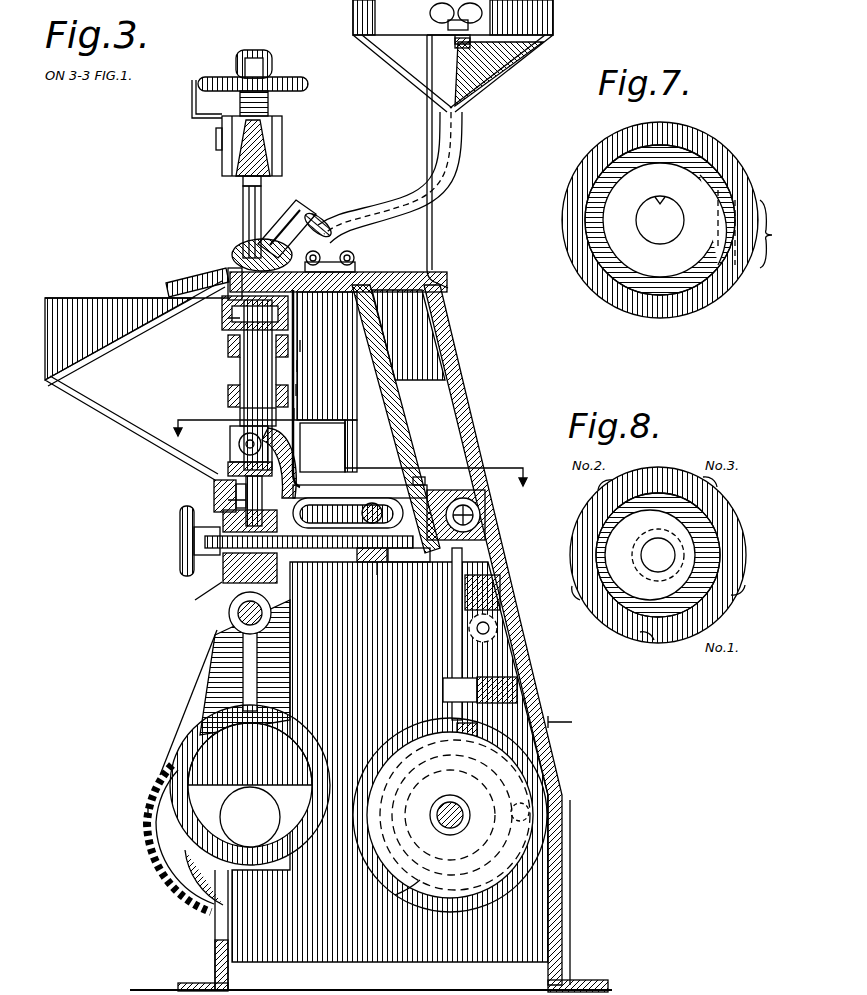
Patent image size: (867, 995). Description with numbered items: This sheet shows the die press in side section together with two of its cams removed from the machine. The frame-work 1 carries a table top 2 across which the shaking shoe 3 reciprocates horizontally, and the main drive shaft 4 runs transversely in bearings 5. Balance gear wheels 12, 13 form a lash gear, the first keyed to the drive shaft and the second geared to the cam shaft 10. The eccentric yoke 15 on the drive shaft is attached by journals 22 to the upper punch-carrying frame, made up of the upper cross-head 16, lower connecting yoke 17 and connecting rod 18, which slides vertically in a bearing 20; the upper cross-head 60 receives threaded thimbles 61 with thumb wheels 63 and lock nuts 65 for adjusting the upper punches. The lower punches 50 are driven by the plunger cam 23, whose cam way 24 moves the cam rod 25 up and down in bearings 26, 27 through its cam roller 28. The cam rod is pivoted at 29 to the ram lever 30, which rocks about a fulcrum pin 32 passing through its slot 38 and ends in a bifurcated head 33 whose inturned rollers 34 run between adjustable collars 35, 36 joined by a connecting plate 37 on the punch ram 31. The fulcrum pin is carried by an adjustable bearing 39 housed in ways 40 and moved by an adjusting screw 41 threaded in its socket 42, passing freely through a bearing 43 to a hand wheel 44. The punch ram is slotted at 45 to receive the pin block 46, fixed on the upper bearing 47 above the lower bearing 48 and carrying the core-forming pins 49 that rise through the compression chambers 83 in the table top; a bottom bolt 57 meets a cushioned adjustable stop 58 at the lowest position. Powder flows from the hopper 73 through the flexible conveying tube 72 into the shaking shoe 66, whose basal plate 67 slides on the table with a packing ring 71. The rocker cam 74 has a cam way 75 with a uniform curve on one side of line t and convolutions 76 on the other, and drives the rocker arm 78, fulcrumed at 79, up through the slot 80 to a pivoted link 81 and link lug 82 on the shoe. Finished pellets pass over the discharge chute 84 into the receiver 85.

In FIG. 3, the frame-work 1 is at (441, 380).
In FIG. 3, the table top 2 is at (370, 284).
In FIG. 3, the shaking shoe 3 is at (290, 238).
In FIG. 3, the main or drive shaft 4 is at (288, 810).
In FIG. 3, the bearings 5 is at (80, 812).
In FIG. 3, the cam shaft 10 is at (450, 815).
In FIG. 3, the balance gear wheel 12 is at (162, 858).
In FIG. 3, the balance gear wheel 13 is at (250, 785).
In FIG. 3, the yoke 15 is at (197, 697).
In FIG. 3, the upper cross-head 16 is at (282, 141).
In FIG. 3, the lower connecting yoke 17 is at (225, 574).
In FIG. 3, the connecting rod 18 is at (243, 214).
In FIG. 3, the bearing 20 is at (230, 318).
In FIG. 3, the journals 22 is at (229, 612).
In FIG. 8, the plunger cam 23 is at (716, 522).
In FIG. 3, the cam way 24 is at (420, 882).
In FIG. 8, the cam way 24 is at (718, 548).
In FIG. 3, the cam rod 25 is at (455, 662).
In FIG. 3, the bearing 26 is at (490, 590).
In FIG. 3, the bearing 27 is at (443, 691).
In FIG. 3, the cam roller 28 is at (480, 752).
In FIG. 3, the pivot 29 is at (481, 515).
In FIG. 3, the ram lever 30 is at (440, 498).
In FIG. 3, the punch ram 31 is at (240, 412).
In FIG. 3, the fulcrum pin 32 is at (372, 504).
In FIG. 3, the bifurcated head 33 is at (295, 416).
In FIG. 3, the inturned rollers 34 is at (297, 391).
In FIG. 3, the adjustable collar 35 is at (232, 440).
In FIG. 3, the adjustable collar 36 is at (232, 466).
In FIG. 3, the connecting plate 37 is at (238, 448).
In FIG. 3, the slot 38 is at (345, 504).
In FIG. 3, the adjustable bearing 39 is at (360, 562).
In FIG. 3, the ways 40 is at (294, 463).
In FIG. 3, the adjusting screw 41 is at (401, 562).
In FIG. 3, the threaded socket 42 is at (380, 574).
In FIG. 3, the bearing 43 is at (195, 600).
In FIG. 3, the hand wheel 44 is at (180, 545).
In FIG. 3, the slot 45 is at (250, 375).
In FIG. 3, the pin block 46 is at (228, 347).
In FIG. 3, the upper bearing 47 is at (300, 350).
In FIG. 3, the lower bearing 48 is at (298, 369).
In FIG. 3, the core-forming pins 49 is at (228, 350).
In FIG. 3, the lower punches 50 is at (225, 305).
In FIG. 3, the bottom bolt 57 is at (215, 488).
In FIG. 3, the cushioned adjustable stop 58 is at (236, 496).
In FIG. 3, the upper cross-head 60 is at (243, 195).
In FIG. 3, the threaded thimbles 61 is at (268, 105).
In FIG. 3, the thumb wheels 63 is at (300, 86).
In FIG. 3, the lock nuts 65 is at (263, 64).
In FIG. 3, the shaking shoe 66 is at (245, 255).
In FIG. 3, the basal plate 67 is at (322, 215).
In FIG. 3, the packing ring 71 is at (529, 812).
In FIG. 3, the conveying tube 72 is at (375, 211).
In FIG. 3, the hopper 73 is at (362, 18).
In FIG. 3, the rocker cam 74 is at (546, 876).
In FIG. 7, the rocker cam 74 is at (590, 262).
In FIG. 3, the cam way 75 is at (470, 898).
In FIG. 7, the cam way 75 is at (727, 172).
In FIG. 3, the convolutions 76 is at (522, 850).
In FIG. 7, the convolutions 76 is at (758, 229).
In FIG. 3, the rocker arm 78 is at (407, 418).
In FIG. 3, the fulcrum 79 is at (497, 630).
In FIG. 3, the slot 80 is at (437, 281).
In FIG. 3, the pivoted link 81 is at (341, 257).
In FIG. 3, the link lug 82 is at (311, 232).
In FIG. 3, the compression chambers 83 is at (232, 280).
In FIG. 3, the discharge chute 84 is at (180, 282).
In FIG. 3, the receiver 85 is at (137, 380).
In FIG. 7, the dotted line T—T t is at (662, 150).